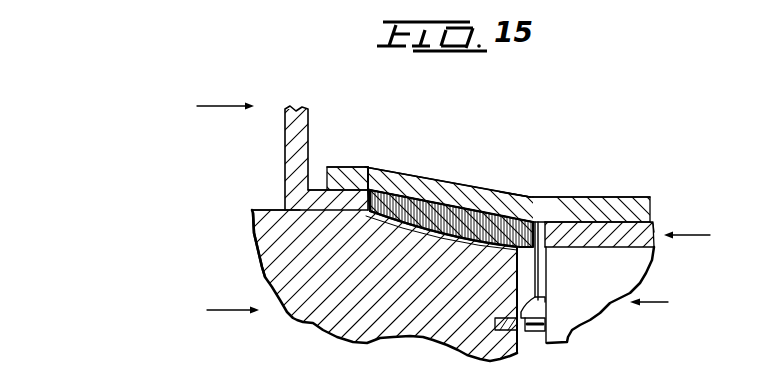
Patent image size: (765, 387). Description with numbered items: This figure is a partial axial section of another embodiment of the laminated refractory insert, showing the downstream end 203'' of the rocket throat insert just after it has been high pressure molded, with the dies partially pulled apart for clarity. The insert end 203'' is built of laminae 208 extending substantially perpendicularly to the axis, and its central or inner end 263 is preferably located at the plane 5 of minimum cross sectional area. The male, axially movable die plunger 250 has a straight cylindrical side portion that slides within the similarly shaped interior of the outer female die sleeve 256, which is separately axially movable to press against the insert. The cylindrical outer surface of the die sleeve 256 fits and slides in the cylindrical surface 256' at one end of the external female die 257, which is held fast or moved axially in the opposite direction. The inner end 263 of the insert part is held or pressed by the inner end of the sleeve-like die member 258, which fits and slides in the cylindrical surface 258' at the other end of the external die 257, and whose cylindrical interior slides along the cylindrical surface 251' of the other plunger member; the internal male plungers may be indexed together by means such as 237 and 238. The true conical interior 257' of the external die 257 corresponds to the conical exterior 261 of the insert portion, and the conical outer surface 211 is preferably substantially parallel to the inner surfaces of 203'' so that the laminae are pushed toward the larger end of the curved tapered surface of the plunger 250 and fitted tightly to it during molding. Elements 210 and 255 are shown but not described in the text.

The plane 5 is at (532, 288).
The downstream end of the rocket throat insert 203'' is at (451, 174).
The laminae 208 is at (448, 196).
The junction 210 is at (370, 190).
The conical outer surface 211 is at (470, 192).
The indexing means 237 is at (496, 327).
The indexing means 238 is at (538, 333).
The die plunger 250 is at (261, 284).
The cylindrical surface 251' is at (615, 242).
The block 255 is at (402, 193).
The outer female die sleeve 256 is at (325, 150).
The cylindrical surface 256' is at (249, 245).
The external female die 257 is at (488, 168).
The conical interior 257' is at (547, 172).
The sleeve-like die member 258 is at (459, 199).
The cylindrical surface 258' is at (600, 193).
The conical exterior 261 is at (646, 282).
The inner end of insert part 263 is at (541, 221).